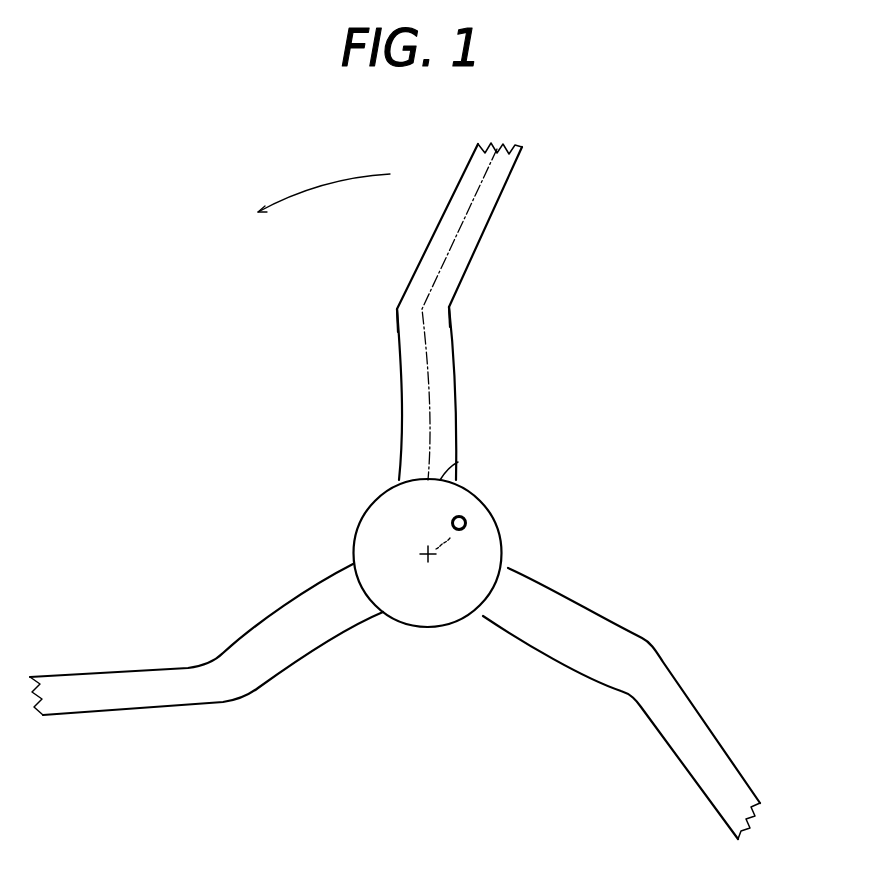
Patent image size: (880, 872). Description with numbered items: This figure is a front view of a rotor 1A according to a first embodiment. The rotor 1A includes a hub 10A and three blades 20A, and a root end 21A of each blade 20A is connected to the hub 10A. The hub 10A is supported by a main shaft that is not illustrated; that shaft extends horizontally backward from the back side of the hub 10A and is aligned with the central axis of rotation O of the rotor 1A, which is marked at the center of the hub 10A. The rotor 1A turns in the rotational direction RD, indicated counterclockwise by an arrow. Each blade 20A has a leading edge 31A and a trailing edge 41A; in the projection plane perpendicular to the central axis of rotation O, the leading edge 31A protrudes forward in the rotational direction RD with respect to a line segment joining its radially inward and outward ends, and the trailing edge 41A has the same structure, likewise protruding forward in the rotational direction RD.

The rotor 1A is at (214, 326).
The hub 10A is at (375, 520).
The blade 20A is at (490, 216).
The root end 21A is at (450, 454).
The leading edge 31A is at (389, 304).
The trailing edge 41A is at (444, 316).
The rotational direction RD is at (324, 184).
The central axis of rotation O is at (443, 540).